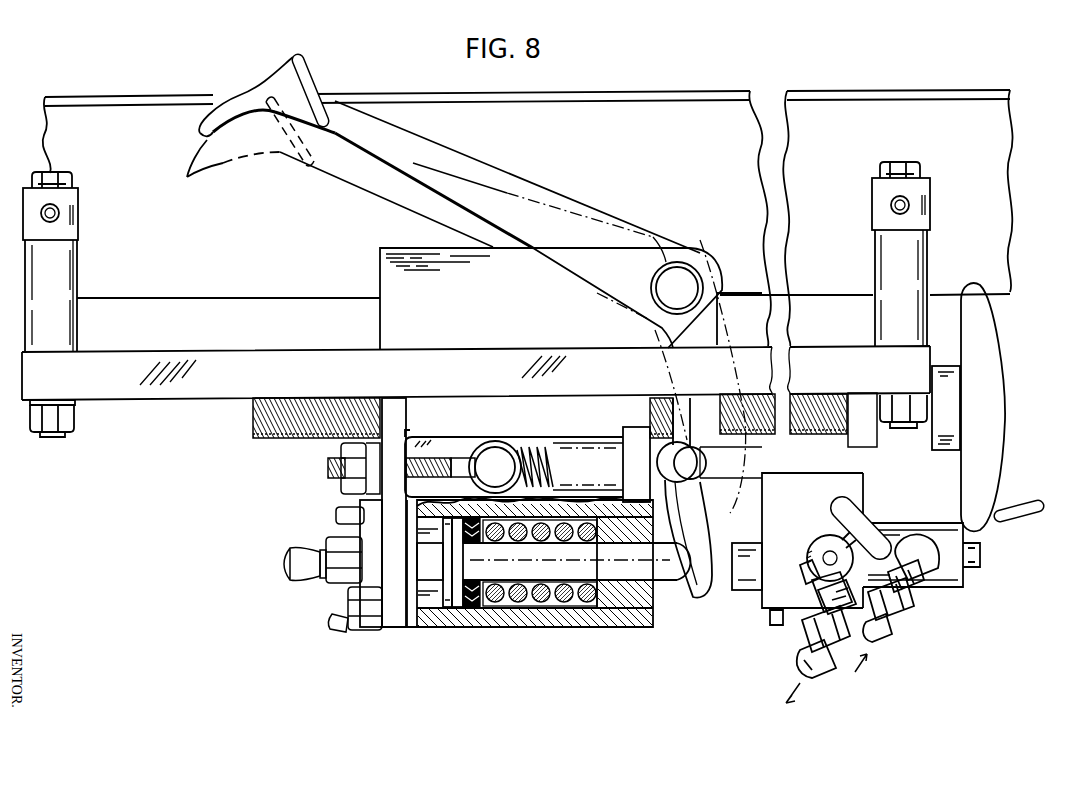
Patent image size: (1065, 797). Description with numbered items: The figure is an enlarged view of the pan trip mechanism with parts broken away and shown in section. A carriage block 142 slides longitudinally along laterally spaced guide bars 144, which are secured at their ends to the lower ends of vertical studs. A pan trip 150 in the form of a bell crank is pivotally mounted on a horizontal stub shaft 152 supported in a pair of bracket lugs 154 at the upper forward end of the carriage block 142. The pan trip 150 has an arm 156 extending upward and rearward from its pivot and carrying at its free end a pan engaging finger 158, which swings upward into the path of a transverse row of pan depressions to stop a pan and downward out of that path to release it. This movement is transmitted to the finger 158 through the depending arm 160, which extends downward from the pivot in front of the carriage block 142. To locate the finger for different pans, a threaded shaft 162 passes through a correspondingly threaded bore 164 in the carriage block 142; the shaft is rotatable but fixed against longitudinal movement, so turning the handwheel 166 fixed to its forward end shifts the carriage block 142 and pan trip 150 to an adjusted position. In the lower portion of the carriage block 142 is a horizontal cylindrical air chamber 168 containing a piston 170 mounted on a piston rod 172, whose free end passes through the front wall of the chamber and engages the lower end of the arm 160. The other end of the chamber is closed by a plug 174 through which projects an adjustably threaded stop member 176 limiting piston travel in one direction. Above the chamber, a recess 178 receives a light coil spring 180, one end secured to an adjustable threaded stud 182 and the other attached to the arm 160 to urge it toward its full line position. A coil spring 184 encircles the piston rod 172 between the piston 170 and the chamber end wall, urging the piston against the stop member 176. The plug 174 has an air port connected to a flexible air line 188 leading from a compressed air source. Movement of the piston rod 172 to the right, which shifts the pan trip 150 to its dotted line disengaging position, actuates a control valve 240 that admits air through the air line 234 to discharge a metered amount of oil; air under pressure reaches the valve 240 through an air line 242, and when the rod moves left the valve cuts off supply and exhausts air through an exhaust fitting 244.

The carriage block 142 is at (653, 617).
The guide bars 144 is at (170, 392).
The pan trip 150 is at (511, 166).
The horizontal stub shaft 152 is at (693, 262).
The bracket lugs 154 is at (570, 247).
The arm 156 is at (432, 152).
The pan engaging finger 158 is at (231, 90).
The depending arm 160 is at (716, 336).
The threaded shaft 162 is at (287, 440).
The threaded bore 164 is at (382, 423).
The handwheel 166 is at (1005, 397).
The air chamber 168 is at (533, 597).
The piston 170 is at (452, 597).
The piston rod 172 is at (590, 560).
The plug 174 is at (373, 570).
The stop member 176 is at (427, 568).
The recess 178 is at (462, 447).
The coil spring 180 is at (532, 443).
The adjustable threaded stud 182 is at (422, 457).
The coil spring 184 is at (500, 597).
The flexible air line 188 is at (345, 633).
The air line 234 is at (818, 665).
The control valve 240 is at (937, 592).
The air line 242 is at (883, 632).
The exhaust fitting 244 is at (812, 544).